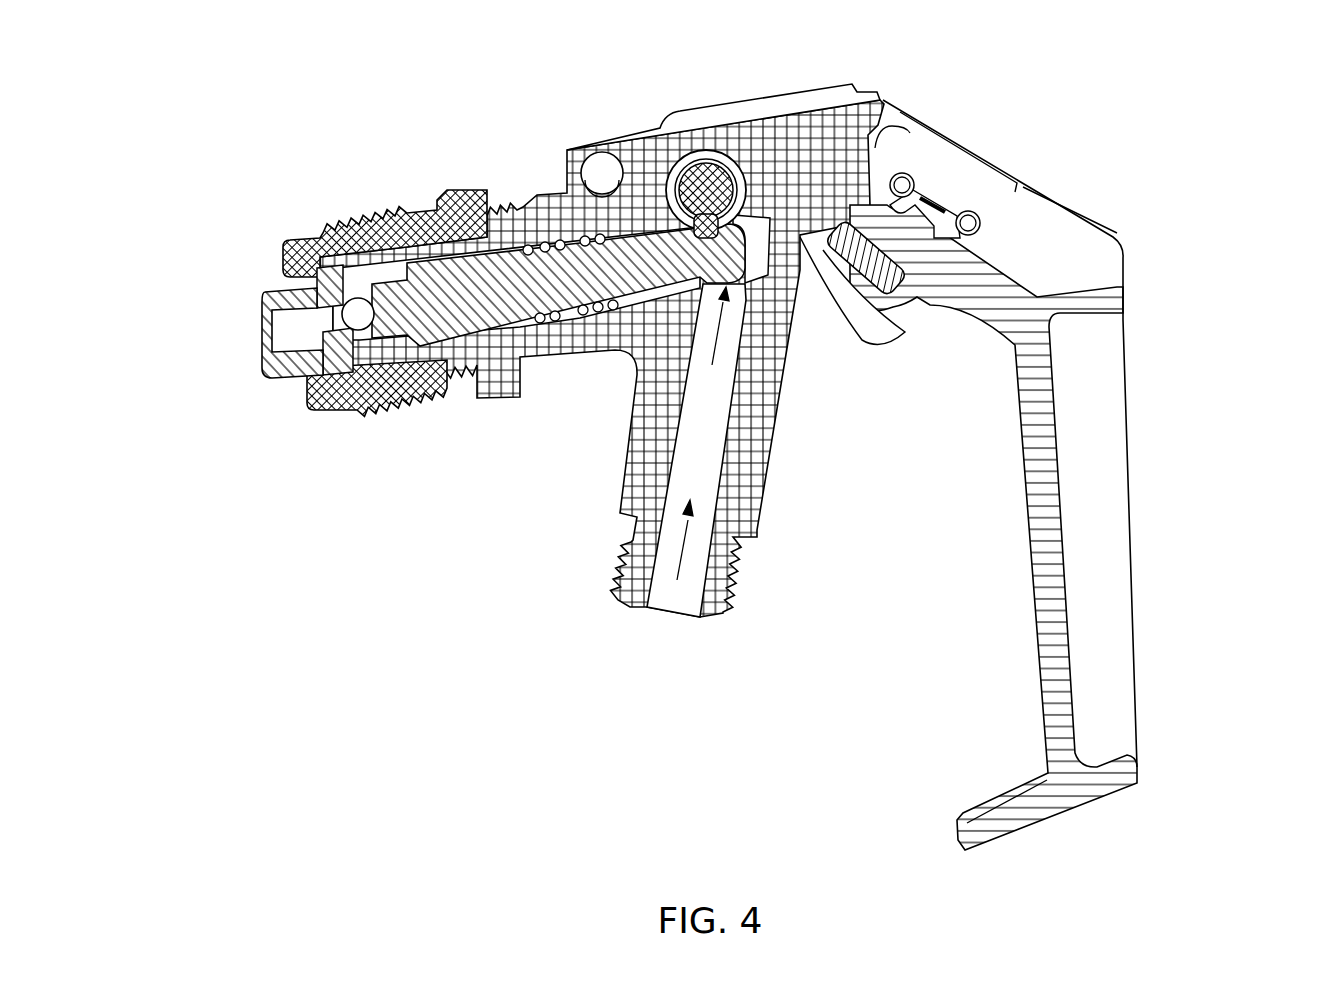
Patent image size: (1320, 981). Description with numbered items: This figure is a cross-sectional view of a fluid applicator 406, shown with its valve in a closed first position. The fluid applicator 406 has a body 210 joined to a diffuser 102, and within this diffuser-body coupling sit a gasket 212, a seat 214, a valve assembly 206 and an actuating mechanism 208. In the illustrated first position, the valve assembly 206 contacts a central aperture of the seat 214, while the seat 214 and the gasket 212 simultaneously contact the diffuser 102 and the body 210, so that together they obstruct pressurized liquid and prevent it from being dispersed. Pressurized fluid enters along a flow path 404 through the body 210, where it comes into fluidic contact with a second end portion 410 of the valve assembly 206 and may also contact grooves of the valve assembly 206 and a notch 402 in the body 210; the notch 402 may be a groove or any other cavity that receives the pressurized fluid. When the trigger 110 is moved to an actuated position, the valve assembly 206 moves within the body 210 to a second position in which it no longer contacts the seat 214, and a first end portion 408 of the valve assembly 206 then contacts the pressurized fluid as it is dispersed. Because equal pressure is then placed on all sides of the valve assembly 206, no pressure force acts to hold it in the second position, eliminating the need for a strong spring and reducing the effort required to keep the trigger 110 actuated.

The diffuser 102 is at (313, 410).
The trigger 110 is at (1098, 539).
The valve assembly 206 is at (463, 312).
The actuating mechanism 208 is at (698, 187).
The body 210 is at (820, 140).
The gasket 212 is at (310, 265).
The seat 214 is at (323, 376).
The notch 402 is at (773, 228).
The flow path 404 is at (683, 547).
The fluid applicator 406 is at (1236, 140).
The first end portion 408 is at (340, 310).
The second end portion 410 is at (753, 219).